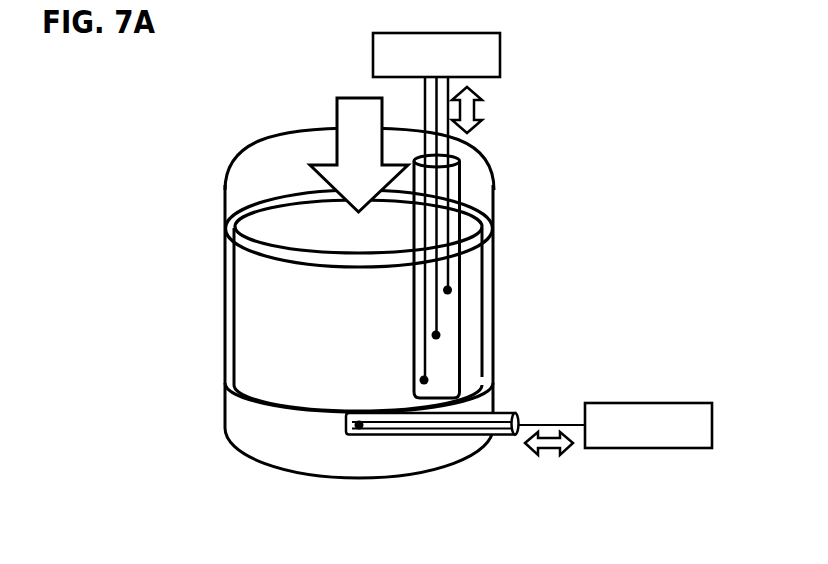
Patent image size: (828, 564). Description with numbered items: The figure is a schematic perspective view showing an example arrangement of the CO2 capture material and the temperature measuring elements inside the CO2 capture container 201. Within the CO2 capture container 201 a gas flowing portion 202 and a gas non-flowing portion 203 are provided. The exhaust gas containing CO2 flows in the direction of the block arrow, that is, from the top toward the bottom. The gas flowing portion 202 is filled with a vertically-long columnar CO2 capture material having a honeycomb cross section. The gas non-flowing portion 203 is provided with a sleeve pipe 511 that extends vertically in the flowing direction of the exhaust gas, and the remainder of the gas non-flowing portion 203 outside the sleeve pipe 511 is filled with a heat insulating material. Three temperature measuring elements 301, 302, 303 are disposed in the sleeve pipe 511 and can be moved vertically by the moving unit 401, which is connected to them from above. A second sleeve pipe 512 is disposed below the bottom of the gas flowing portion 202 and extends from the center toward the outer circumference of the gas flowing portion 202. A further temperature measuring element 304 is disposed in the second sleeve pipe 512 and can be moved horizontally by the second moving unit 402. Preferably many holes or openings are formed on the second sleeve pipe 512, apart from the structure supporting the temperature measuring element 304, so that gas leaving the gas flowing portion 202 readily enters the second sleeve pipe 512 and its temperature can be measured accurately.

The CO2 capture container 201 is at (277, 136).
The gas flowing portion 202 is at (258, 280).
The gas non-flowing portion 203 is at (229, 323).
The temperature measuring element 301 is at (451, 291).
The temperature measuring element 302 is at (440, 336).
The temperature measuring element 303 is at (428, 381).
The temperature measuring element 304 is at (356, 436).
The moving unit 401 is at (501, 57).
The second moving unit 402 is at (650, 403).
The sleeve pipe 511 is at (461, 182).
The second sleeve pipe 512 is at (428, 436).